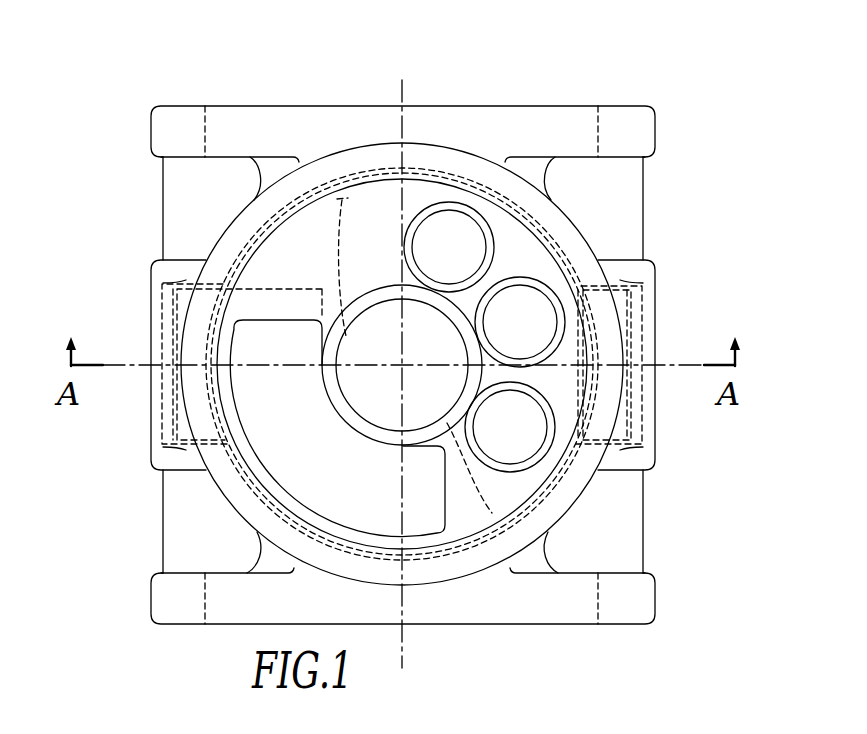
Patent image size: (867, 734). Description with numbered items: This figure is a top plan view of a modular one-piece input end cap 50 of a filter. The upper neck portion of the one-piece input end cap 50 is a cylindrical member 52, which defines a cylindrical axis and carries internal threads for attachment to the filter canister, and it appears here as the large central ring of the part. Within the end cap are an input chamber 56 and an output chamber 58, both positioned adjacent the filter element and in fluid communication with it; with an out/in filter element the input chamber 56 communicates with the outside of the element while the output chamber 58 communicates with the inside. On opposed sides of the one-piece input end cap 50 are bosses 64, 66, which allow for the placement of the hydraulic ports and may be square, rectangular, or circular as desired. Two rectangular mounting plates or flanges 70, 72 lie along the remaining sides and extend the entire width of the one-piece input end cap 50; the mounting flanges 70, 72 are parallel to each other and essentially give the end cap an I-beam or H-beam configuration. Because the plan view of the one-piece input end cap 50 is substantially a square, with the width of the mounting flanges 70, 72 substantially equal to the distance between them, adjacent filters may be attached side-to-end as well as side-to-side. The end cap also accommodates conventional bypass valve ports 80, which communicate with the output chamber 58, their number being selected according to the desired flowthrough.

The one-piece input end cap 50 is at (411, 93).
The cylindrical member 52 is at (567, 238).
The input chamber 56 is at (285, 461).
The output chamber 58 is at (514, 494).
The boss 64 is at (168, 407).
The boss 66 is at (637, 347).
The mounting flange 70 is at (524, 616).
The mounting flange 72 is at (558, 106).
The bypass valve ports 80 is at (458, 232).